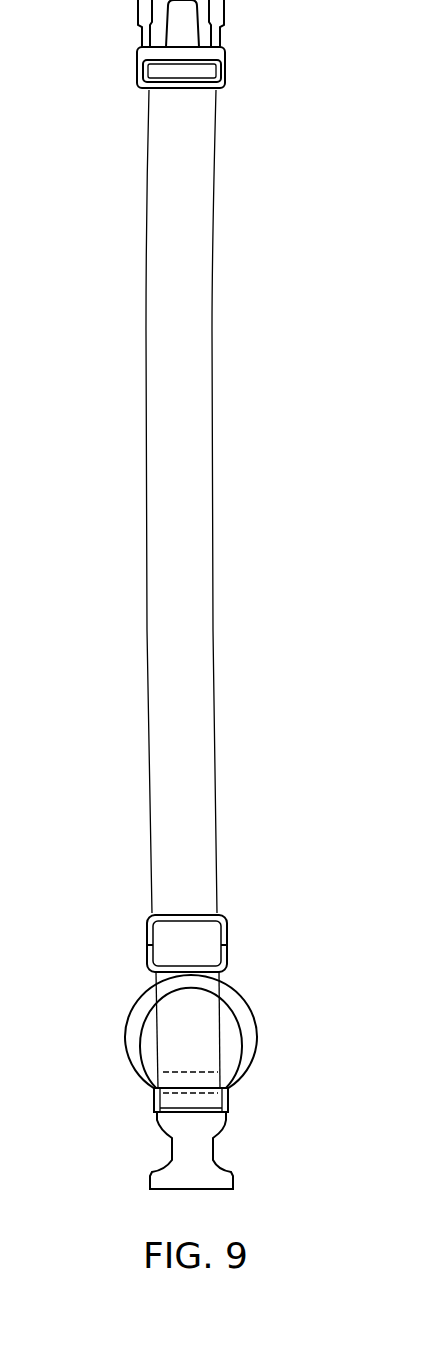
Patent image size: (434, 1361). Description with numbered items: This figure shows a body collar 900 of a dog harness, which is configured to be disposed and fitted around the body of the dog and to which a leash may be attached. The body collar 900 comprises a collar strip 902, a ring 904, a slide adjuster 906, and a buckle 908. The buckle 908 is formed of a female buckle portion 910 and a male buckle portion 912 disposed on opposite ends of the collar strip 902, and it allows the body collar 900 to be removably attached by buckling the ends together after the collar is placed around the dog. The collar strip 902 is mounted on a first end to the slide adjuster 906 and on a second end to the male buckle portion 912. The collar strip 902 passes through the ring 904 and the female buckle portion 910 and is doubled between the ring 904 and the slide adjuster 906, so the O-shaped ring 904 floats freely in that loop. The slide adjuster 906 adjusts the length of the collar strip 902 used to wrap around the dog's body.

The body collar 900 is at (284, 296).
The collar strip 902 is at (155, 440).
The ring 904 is at (135, 1003).
The slide adjuster 906 is at (147, 930).
The buckle 908 is at (137, 60).
The female buckle portion 910 is at (216, 1153).
The male buckle portion 912 is at (226, 22).